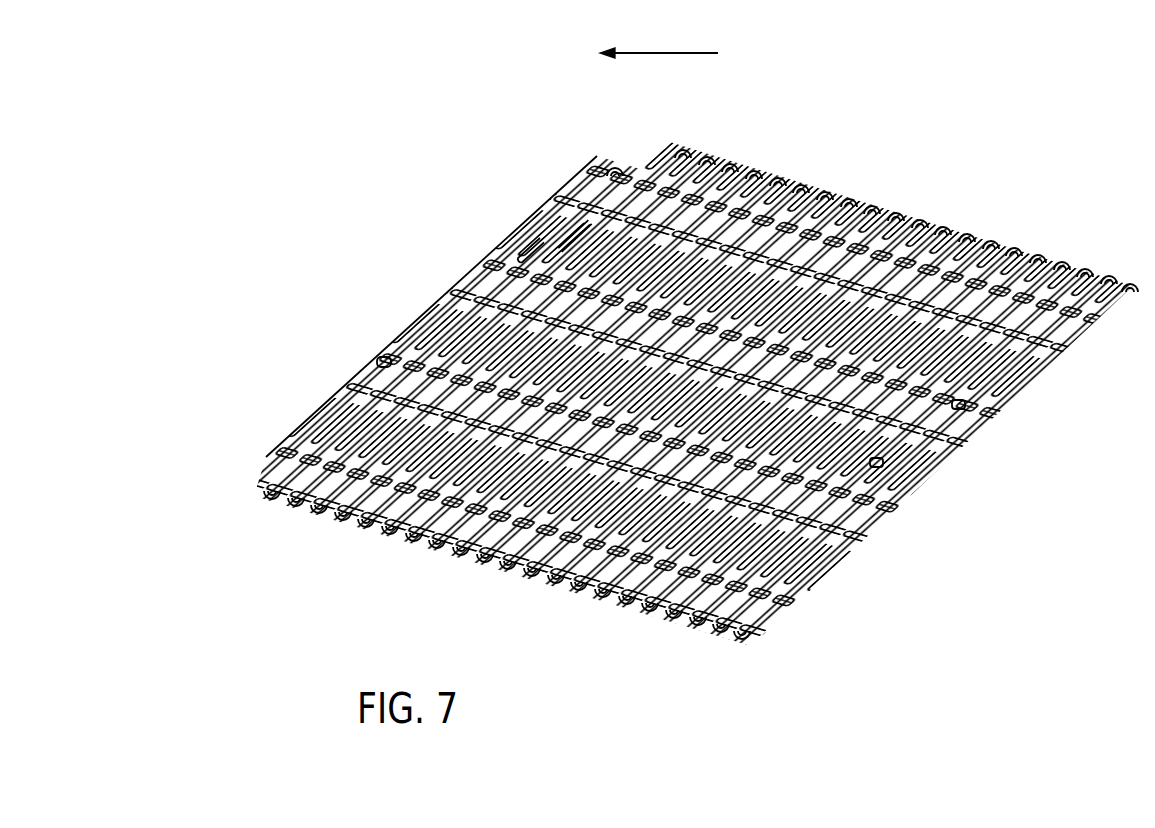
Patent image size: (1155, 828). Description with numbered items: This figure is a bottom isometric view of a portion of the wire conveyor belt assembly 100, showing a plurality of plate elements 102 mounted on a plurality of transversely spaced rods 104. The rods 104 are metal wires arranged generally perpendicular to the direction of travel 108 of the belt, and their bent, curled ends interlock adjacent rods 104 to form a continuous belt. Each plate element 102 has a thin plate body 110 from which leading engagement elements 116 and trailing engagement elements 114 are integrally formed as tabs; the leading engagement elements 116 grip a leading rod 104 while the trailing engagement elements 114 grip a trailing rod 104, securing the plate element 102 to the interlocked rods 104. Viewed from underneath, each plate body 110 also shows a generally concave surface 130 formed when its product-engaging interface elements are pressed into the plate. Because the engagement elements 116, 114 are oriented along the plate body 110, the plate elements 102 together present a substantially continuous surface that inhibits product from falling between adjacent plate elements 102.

The wire conveyor belt assembly 100 is at (1047, 623).
The plate element 102 is at (450, 311).
The rod 104 is at (572, 240).
The direction of travel 108 is at (659, 37).
The plate body 110 is at (525, 248).
The trailing engagement element 114 is at (960, 406).
The leading engagement element 116 is at (385, 360).
The concave surface 130 is at (876, 463).